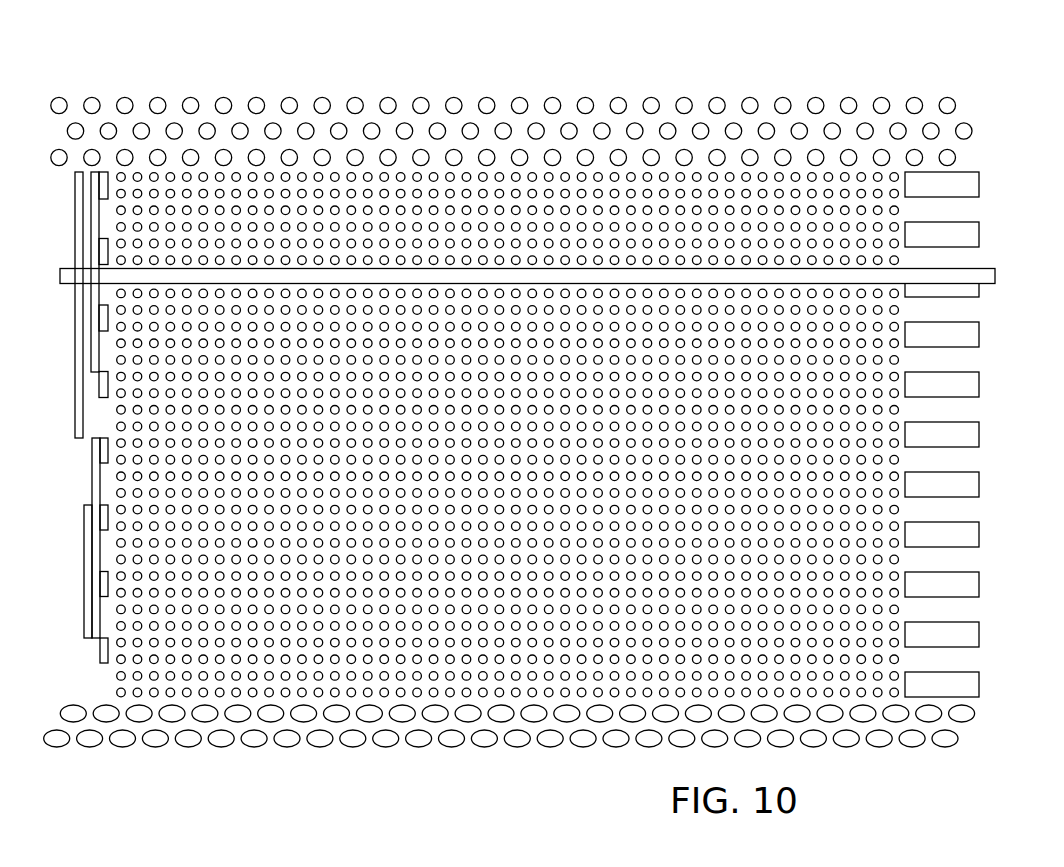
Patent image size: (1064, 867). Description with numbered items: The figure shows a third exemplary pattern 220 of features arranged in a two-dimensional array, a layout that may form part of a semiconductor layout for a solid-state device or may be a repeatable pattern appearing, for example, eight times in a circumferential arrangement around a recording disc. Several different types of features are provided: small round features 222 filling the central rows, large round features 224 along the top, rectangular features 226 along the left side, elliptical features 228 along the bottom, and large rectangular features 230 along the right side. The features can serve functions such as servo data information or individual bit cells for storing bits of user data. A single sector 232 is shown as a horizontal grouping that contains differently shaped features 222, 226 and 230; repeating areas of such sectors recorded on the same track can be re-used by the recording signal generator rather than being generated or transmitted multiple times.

The pattern 220 is at (950, 52).
The small round features 222 is at (680, 173).
The large round features 224 is at (798, 123).
The rectangular features 226 is at (84, 600).
The elliptical features 228 is at (484, 748).
The large rectangular features 230 is at (982, 483).
The sector 232 is at (60, 277).